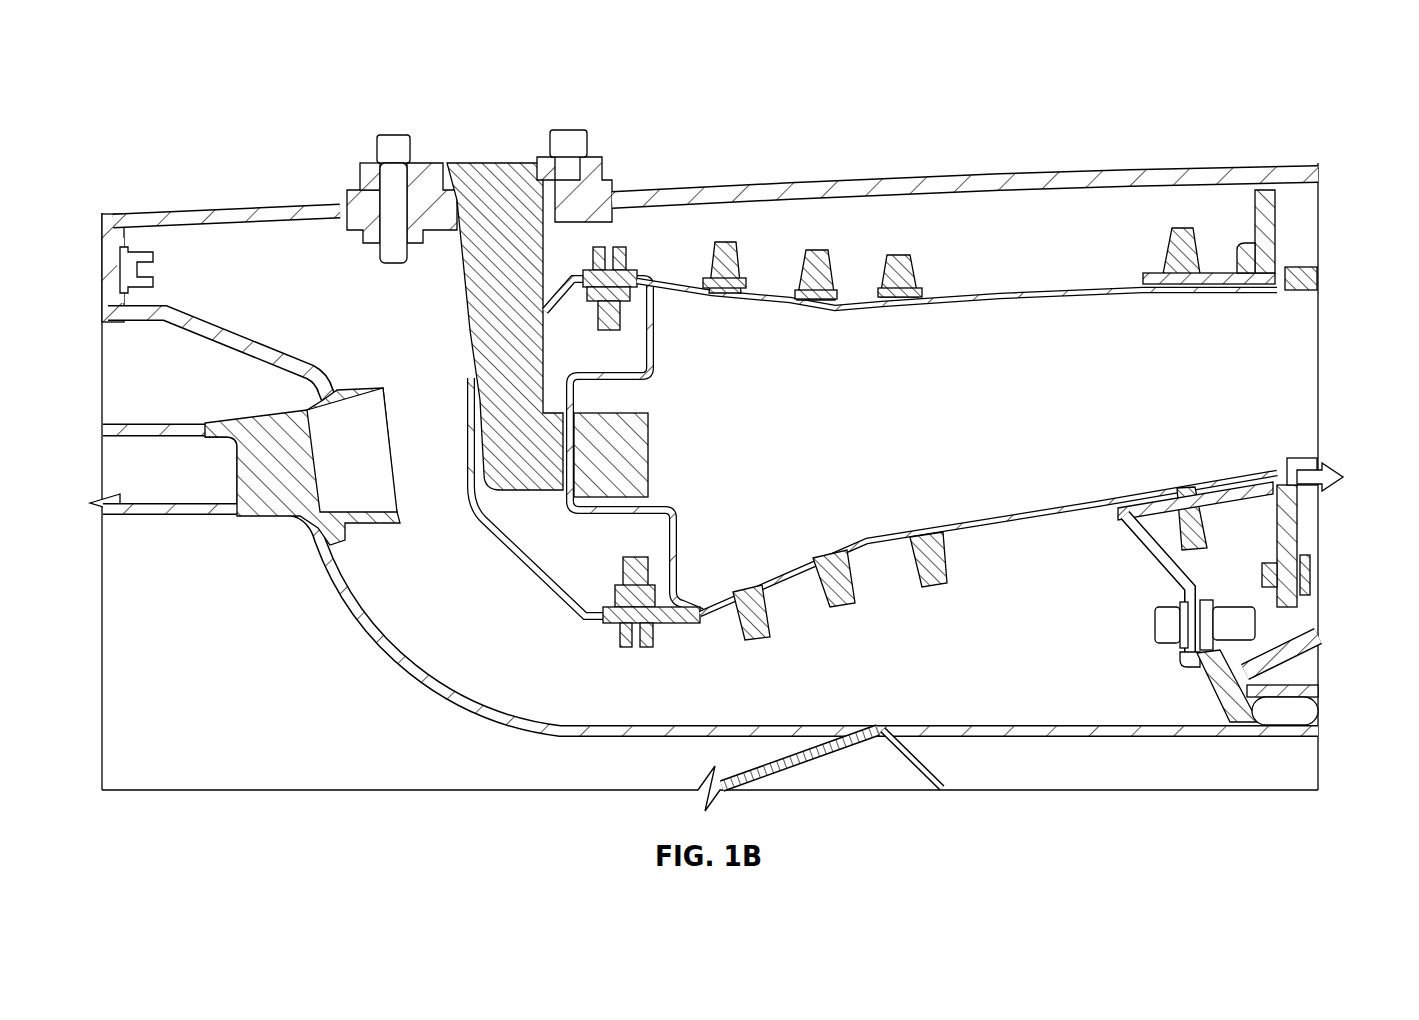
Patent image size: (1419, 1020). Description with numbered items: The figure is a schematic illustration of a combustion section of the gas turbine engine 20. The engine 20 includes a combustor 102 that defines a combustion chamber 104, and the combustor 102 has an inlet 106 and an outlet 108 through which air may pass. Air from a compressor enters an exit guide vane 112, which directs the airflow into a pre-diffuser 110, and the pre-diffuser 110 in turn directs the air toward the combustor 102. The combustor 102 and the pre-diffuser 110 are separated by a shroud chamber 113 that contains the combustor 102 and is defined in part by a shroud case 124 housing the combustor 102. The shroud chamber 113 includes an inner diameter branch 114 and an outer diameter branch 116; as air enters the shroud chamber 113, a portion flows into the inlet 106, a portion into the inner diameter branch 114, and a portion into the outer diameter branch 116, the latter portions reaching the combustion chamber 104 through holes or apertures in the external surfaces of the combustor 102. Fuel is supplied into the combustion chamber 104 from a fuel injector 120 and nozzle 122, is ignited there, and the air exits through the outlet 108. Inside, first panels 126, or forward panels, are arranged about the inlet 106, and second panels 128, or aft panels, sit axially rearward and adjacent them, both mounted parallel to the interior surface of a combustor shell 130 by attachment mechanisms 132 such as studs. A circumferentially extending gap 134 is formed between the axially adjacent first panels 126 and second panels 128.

The engine 20 is at (163, 83).
The combustor 102 is at (1082, 281).
The combustion chamber 104 is at (891, 448).
The inlet 106 is at (452, 426).
The outlet 108 is at (1296, 341).
The pre-diffuser 110 is at (272, 508).
The exit guide vane 112 is at (183, 453).
The shroud chamber 113 is at (451, 585).
The inner diameter branch 114 is at (731, 685).
The outer diameter branch 116 is at (701, 251).
The fuel injector 120 is at (492, 182).
The nozzle 122 is at (648, 452).
The shroud case 124 is at (905, 182).
The first panels 126 is at (738, 300).
The second panels 128 is at (965, 302).
The combustor shell 130 is at (775, 285).
The attachment mechanisms 132 is at (810, 277).
The gap 134 is at (857, 311).